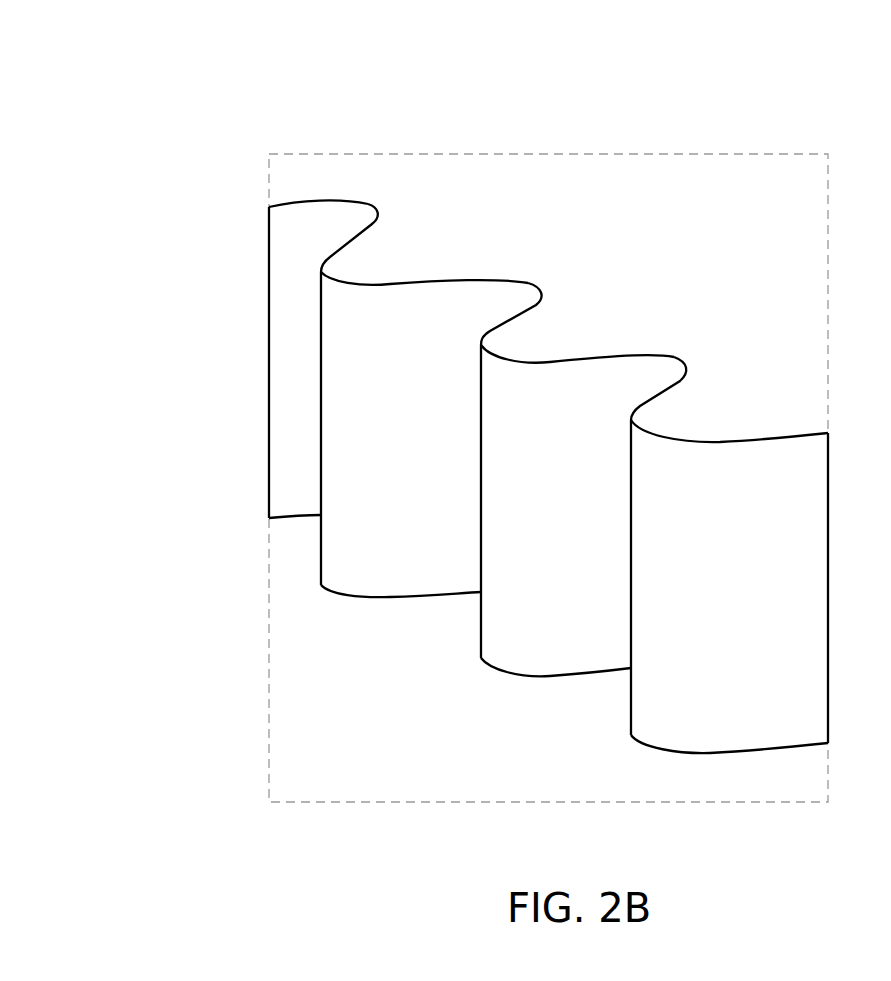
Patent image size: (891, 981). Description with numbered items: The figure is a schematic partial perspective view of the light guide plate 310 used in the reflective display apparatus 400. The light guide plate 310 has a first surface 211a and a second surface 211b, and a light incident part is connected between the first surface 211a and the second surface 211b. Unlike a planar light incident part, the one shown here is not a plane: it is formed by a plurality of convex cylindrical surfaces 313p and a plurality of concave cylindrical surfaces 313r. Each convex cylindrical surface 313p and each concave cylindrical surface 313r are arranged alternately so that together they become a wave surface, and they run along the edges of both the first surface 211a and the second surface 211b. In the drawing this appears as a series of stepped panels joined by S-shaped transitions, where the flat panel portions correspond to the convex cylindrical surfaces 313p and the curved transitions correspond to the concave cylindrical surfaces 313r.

The reflective display apparatus 400 is at (94, 50).
The light guide plate 310 is at (232, 150).
The concave cylindrical surface 313r is at (490, 303).
The convex cylindrical surface 313p is at (652, 597).
The first surface 211a is at (728, 407).
The second surface 211b is at (710, 755).